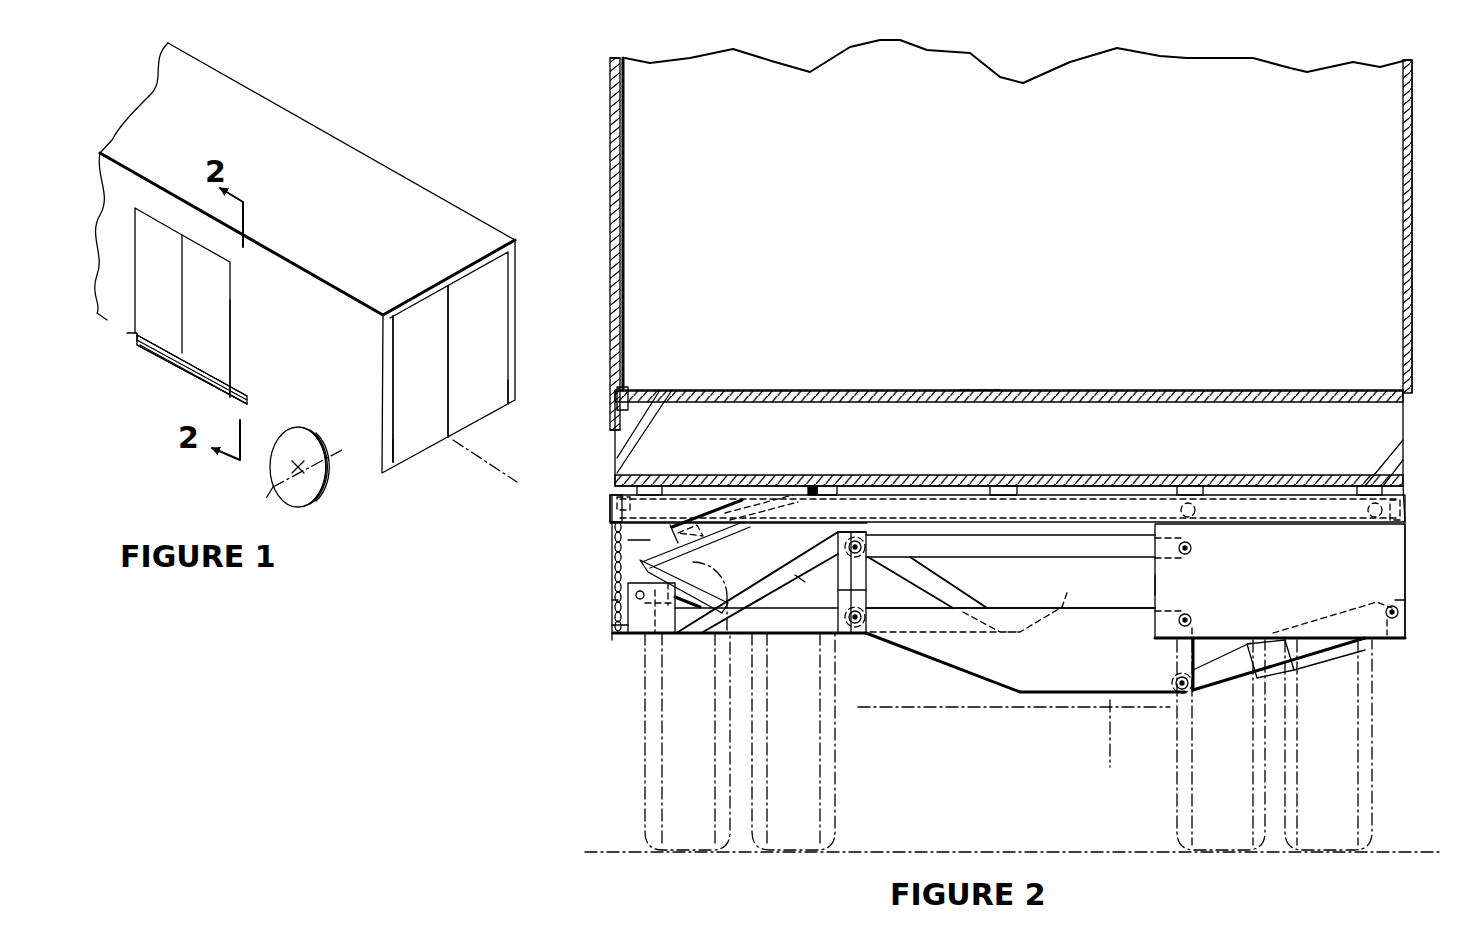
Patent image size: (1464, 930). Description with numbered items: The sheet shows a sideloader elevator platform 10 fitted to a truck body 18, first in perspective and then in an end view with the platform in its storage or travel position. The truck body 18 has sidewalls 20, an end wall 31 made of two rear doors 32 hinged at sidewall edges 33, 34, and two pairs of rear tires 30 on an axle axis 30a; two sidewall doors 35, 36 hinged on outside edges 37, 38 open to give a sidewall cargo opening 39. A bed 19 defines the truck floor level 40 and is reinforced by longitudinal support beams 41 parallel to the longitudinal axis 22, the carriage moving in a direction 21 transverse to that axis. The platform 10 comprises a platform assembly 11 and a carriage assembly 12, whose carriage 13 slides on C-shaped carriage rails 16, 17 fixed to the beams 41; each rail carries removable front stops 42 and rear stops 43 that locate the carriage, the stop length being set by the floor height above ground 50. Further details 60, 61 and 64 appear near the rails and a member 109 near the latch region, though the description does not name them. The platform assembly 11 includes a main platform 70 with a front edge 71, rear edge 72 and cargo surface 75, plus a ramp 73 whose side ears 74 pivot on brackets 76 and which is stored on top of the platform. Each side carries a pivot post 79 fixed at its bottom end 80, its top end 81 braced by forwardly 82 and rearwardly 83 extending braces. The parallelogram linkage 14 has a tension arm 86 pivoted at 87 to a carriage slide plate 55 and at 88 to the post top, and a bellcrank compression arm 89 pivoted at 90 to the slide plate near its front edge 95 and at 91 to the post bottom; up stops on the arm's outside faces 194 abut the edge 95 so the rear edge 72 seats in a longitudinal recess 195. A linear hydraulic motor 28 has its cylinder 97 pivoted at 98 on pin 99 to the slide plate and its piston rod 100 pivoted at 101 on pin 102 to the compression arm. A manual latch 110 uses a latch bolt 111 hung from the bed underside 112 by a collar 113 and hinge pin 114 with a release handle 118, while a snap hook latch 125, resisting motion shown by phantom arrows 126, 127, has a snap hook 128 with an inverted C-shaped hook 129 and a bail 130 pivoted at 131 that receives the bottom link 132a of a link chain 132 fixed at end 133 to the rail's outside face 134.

In FIG. 1, the sideloader elevator platform 10 is at (177, 384).
In FIG. 2, the sideloader elevator platform 10 is at (575, 656).
In FIG. 2, the platform assembly 11 is at (866, 712).
In FIG. 2, the carriage assembly 12 is at (1398, 662).
In FIG. 2, the carriage 13 is at (1372, 566).
In FIG. 2, the parallelogram linkage 14 is at (1019, 699).
In FIG. 1, the carriage rail 16 is at (236, 400).
In FIG. 2, the carriage rail 16 is at (1080, 505).
In FIG. 1, the carriage rail 17 is at (126, 338).
In FIG. 1, the truck body 18 is at (416, 150).
In FIG. 2, the truck body 18 is at (1153, 72).
In FIG. 2, the truck bed 19 is at (1030, 400).
In FIG. 1, the sidewall 20 is at (298, 320).
In FIG. 2, the sidewall 20 is at (625, 55).
In FIG. 1, the direction 21 is at (82, 465).
In FIG. 2, the direction 21 is at (1030, 790).
In FIG. 1, the longitudinal axis 22 is at (485, 488).
In FIG. 2, the linear hydraulic motor 28 is at (1318, 655).
In FIG. 1, the rear tires 30 is at (343, 500).
In FIG. 2, the rear tires 30 is at (645, 815).
In FIG. 1, the axle axis 30a is at (273, 490).
In FIG. 2, the axle axis 30a is at (1118, 741).
In FIG. 1, the end wall 31 is at (452, 300).
In FIG. 1, the rear doors 32 is at (432, 318).
In FIG. 1, the sidewall edge 33 is at (393, 458).
In FIG. 1, the sidewall edge 34 is at (508, 385).
In FIG. 1, the sidewall door 35 is at (156, 212).
In FIG. 2, the sidewall door 35 is at (606, 160).
In FIG. 1, the sidewall door 36 is at (215, 273).
In FIG. 2, the sidewall door 36 is at (615, 244).
In FIG. 1, the outside edge 37 is at (135, 283).
In FIG. 1, the outside edge 38 is at (231, 323).
In FIG. 1, the sidewall cargo opening 39 is at (156, 353).
In FIG. 2, the truck floor level 40 is at (970, 388).
In FIG. 2, the longitudinal support beams 41 is at (663, 487).
In FIG. 2, the front stops 42 is at (600, 507).
In FIG. 2, the rear stops 43 is at (1407, 498).
In FIG. 2, the ground 50 is at (952, 852).
In FIG. 2, the carriage slide plate 55 is at (1270, 577).
In FIG. 2, the pivot 60 is at (1192, 482).
In FIG. 2, the pivot 61 is at (1348, 482).
In FIG. 2, the latch 64 is at (1395, 518).
In FIG. 1, the main platform 70 is at (205, 392).
In FIG. 2, the main platform 70 is at (812, 612).
In FIG. 1, the front edge 71 is at (208, 402).
In FIG. 2, the front edge 71 is at (655, 633).
In FIG. 2, the rear edge 72 is at (1066, 606).
In FIG. 2, the ramp 73 is at (690, 637).
In FIG. 2, the side ears 74 is at (640, 633).
In FIG. 2, the cargo surface 75 is at (790, 585).
In FIG. 2, the brackets 76 is at (664, 636).
In FIG. 2, the pivot post 79 is at (868, 590).
In FIG. 2, the bottom end 80 is at (852, 637).
In FIG. 2, the top end 81 is at (852, 534).
In FIG. 2, the forwardly extending brace 82 is at (805, 577).
In FIG. 2, the rearwardly extending brace 83 is at (950, 591).
In FIG. 2, the tension arm 86 is at (1010, 571).
In FIG. 2, the pivot connection 87 is at (1193, 548).
In FIG. 2, the pivot connection 88 is at (867, 541).
In FIG. 2, the compression arm 89 is at (1068, 666).
In FIG. 2, the pivot connection 90 is at (1193, 618).
In FIG. 2, the pivot connection 91 is at (866, 619).
In FIG. 2, the front edge 95 is at (1155, 583).
In FIG. 2, the cylinder 97 is at (1310, 665).
In FIG. 2, the pivot connection 98 is at (1405, 600).
In FIG. 2, the pin 99 is at (1400, 615).
In FIG. 2, the piston rod 100 is at (1232, 682).
In FIG. 2, the pivot connection 101 is at (1178, 692).
In FIG. 2, the pin 102 is at (1175, 683).
In FIG. 2, the lever bar 109 is at (696, 577).
In FIG. 2, the manual latch 110 is at (642, 542).
In FIG. 2, the latch bolt 111 is at (732, 500).
In FIG. 2, the underside 112 is at (811, 485).
In FIG. 2, the collar 113 is at (815, 483).
In FIG. 2, the hinge pin 114 is at (820, 483).
In FIG. 2, the handle 118 is at (740, 527).
In FIG. 2, the snap hook latch 125 is at (583, 668).
In FIG. 2, the phantom arrow 126 is at (1078, 812).
In FIG. 2, the phantom arrow 127 is at (1073, 795).
In FIG. 2, the snap hook 128 is at (607, 646).
In FIG. 2, the inverted C-shaped hook 129 is at (630, 633).
In FIG. 2, the bail 130 is at (610, 626).
In FIG. 2, the pivot mount 131 is at (575, 665).
In FIG. 2, the link chain 132 is at (612, 570).
In FIG. 2, the bottom link 132a is at (610, 600).
In FIG. 2, the chain end 133 is at (612, 532).
In FIG. 2, the outside face 134 is at (630, 474).
In FIG. 2, the outside faces 194 is at (1065, 645).
In FIG. 2, the longitudinal recess 195 is at (630, 388).